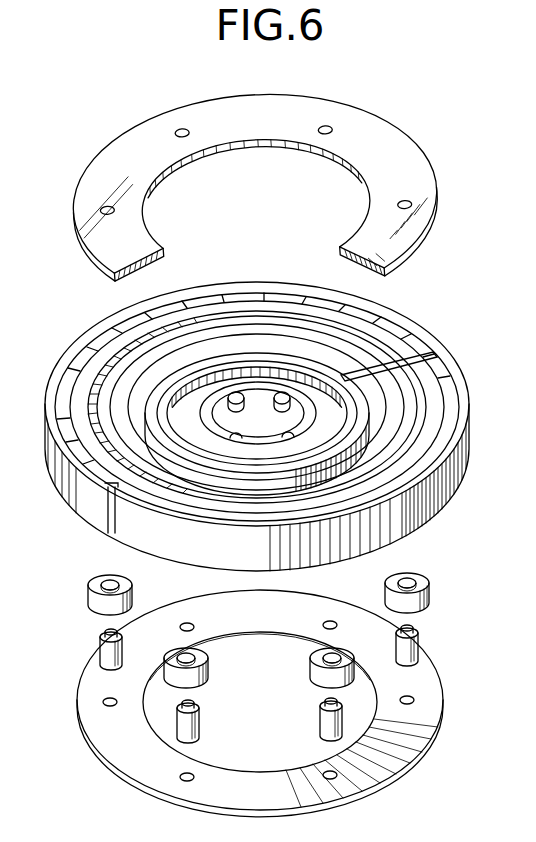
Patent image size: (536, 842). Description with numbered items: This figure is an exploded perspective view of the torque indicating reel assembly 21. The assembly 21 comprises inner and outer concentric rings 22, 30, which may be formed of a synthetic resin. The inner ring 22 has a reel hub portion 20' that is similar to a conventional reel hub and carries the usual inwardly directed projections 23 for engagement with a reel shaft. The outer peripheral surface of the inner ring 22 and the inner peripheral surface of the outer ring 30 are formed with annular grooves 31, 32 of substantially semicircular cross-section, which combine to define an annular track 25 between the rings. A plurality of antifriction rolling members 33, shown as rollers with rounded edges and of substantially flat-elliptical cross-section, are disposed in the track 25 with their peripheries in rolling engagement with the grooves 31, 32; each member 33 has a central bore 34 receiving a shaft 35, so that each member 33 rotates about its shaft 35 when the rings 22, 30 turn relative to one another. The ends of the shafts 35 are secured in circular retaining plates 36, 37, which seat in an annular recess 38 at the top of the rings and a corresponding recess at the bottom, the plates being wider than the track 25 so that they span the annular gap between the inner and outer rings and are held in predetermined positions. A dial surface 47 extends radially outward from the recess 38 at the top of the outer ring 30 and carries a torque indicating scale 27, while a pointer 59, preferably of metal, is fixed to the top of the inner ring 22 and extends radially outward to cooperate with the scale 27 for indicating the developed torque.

The reel hub portion 20' is at (281, 424).
The assembly 21 is at (416, 300).
The inner ring 22 is at (355, 390).
The inwardly directed projections 23 is at (258, 413).
The annular track 25 is at (170, 468).
The torque indicating scale 27 is at (272, 289).
The outer ring 30 is at (63, 460).
The annular groove 31 is at (242, 492).
The annular groove 32 is at (125, 372).
The antifriction rolling members 33 is at (130, 603).
The bore 34 is at (108, 588).
The shaft 35 is at (102, 650).
The retaining plate 36 is at (372, 133).
The retaining plate 37 is at (425, 676).
The annular recess 38 is at (140, 334).
The dial surface 47 is at (410, 332).
The pointer 59 is at (442, 352).